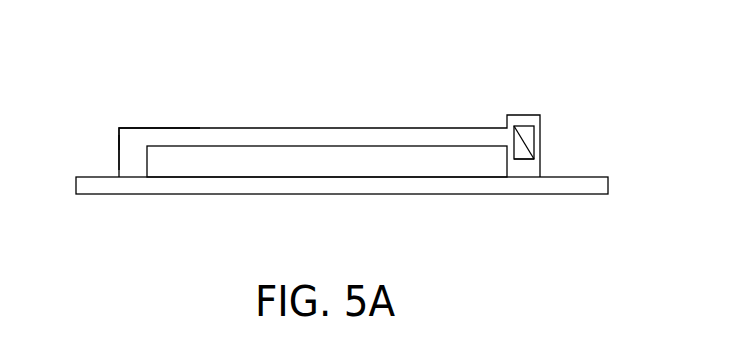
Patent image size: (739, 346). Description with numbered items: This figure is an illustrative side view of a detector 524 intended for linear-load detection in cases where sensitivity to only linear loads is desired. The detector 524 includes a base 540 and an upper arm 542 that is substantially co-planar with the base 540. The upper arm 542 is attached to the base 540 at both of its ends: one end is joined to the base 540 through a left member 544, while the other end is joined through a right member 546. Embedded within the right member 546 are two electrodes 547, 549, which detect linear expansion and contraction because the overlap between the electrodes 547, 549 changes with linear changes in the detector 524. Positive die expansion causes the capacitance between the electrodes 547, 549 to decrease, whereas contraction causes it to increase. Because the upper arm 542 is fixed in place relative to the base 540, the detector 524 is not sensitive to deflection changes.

The detector 524 is at (142, 128).
The base 540 is at (311, 183).
The upper arm 542 is at (316, 137).
The left member 544 is at (119, 151).
The right member 546 is at (534, 141).
The electrode 547 is at (527, 127).
The electrode 549 is at (519, 155).